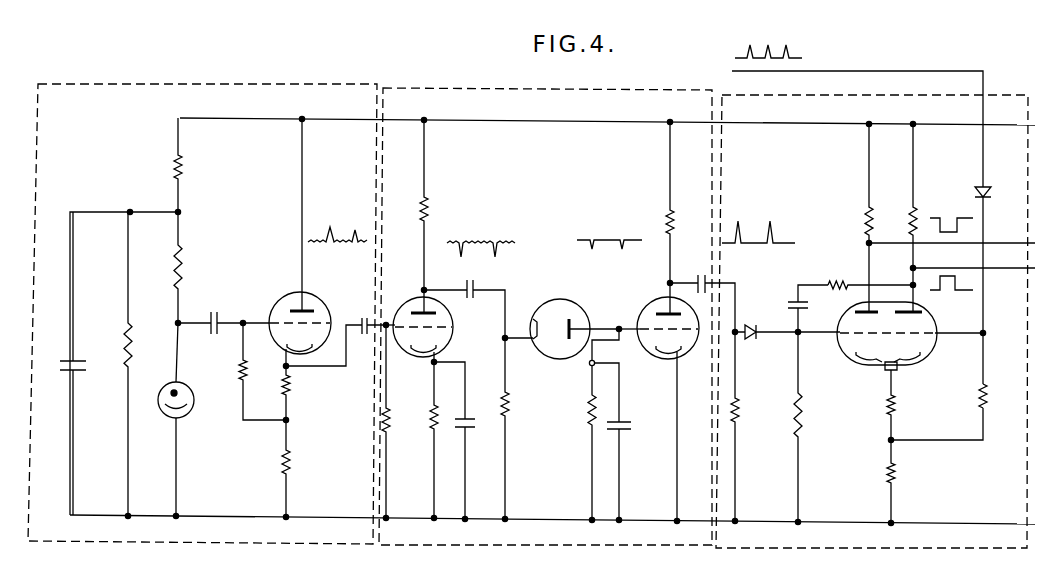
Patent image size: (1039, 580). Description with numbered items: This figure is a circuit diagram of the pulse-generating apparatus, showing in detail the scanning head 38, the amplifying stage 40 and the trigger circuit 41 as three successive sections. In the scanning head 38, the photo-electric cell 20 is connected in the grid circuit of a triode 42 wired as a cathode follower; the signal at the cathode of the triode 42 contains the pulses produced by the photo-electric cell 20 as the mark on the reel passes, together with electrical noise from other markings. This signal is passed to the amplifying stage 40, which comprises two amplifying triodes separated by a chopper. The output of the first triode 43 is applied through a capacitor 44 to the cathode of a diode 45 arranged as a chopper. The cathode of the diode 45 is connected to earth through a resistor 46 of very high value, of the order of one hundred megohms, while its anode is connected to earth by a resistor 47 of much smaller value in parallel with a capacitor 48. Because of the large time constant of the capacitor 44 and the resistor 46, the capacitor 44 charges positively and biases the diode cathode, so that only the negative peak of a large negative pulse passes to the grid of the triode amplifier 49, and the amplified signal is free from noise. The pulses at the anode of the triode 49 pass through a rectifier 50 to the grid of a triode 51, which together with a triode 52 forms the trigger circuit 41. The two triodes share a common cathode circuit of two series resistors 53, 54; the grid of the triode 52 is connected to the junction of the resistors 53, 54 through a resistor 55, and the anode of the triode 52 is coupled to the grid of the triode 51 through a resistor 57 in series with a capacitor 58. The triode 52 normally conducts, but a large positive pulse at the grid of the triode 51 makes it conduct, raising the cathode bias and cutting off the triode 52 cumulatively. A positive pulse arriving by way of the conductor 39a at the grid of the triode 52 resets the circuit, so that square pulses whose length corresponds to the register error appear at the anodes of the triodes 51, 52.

The photo-electric cell 20 is at (184, 390).
The scanning head 38 is at (271, 84).
The conductor 39a is at (869, 71).
The amplifying stage 40 is at (448, 90).
The trigger circuit 41 is at (748, 92).
The triode 42 is at (309, 301).
The first triode 43 is at (446, 339).
The capacitor 44 is at (478, 289).
The diode 45 is at (560, 299).
The resistor 46 is at (509, 388).
The resistor 47 is at (590, 401).
The capacitor 48 is at (616, 426).
The triode amplifier 49 is at (652, 306).
The rectifier 50 is at (750, 323).
The triode 51 is at (847, 354).
The triode 52 is at (918, 357).
The resistor 53 is at (895, 406).
The resistor 54 is at (895, 473).
The resistor 55 is at (978, 398).
The resistor 57 is at (836, 281).
The capacitor 58 is at (797, 295).